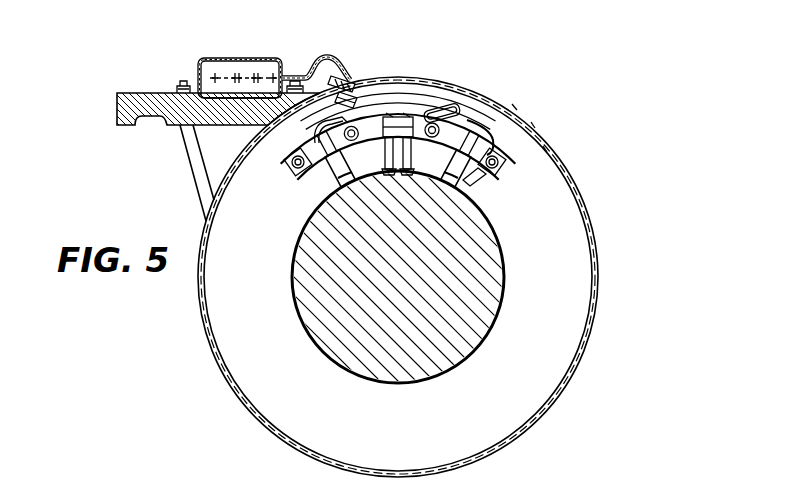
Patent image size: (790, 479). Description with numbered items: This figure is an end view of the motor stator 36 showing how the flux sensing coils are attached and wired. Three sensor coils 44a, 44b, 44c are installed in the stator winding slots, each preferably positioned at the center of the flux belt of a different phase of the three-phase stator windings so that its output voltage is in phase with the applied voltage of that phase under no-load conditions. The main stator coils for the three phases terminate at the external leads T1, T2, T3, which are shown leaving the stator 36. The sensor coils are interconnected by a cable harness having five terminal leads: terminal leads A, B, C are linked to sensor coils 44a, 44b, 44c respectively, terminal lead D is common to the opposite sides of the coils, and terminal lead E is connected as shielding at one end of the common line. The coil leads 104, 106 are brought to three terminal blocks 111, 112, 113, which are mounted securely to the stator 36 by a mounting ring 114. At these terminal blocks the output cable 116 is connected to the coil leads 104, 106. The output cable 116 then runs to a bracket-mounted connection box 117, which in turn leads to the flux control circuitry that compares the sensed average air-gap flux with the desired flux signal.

The stator 36 is at (573, 288).
The connection box 117 is at (200, 68).
The output cable 116 is at (310, 58).
The terminal block 113 is at (287, 148).
The terminal block 111 is at (499, 151).
The mounting ring 114 is at (503, 175).
The coil lead 104 is at (330, 172).
The coil lead 106 is at (355, 182).
The terminal block 112 is at (380, 138).
The sensor coil 44a is at (343, 190).
The sensor coil 44b is at (415, 185).
The sensor coil 44c is at (455, 188).
The terminal lead A is at (324, 121).
The terminal lead B is at (389, 113).
The terminal lead C is at (478, 118).
The terminal lead D is at (403, 113).
The terminal lead E is at (490, 126).
The external lead T1 is at (547, 152).
The external lead T2 is at (535, 128).
The external lead T3 is at (518, 110).